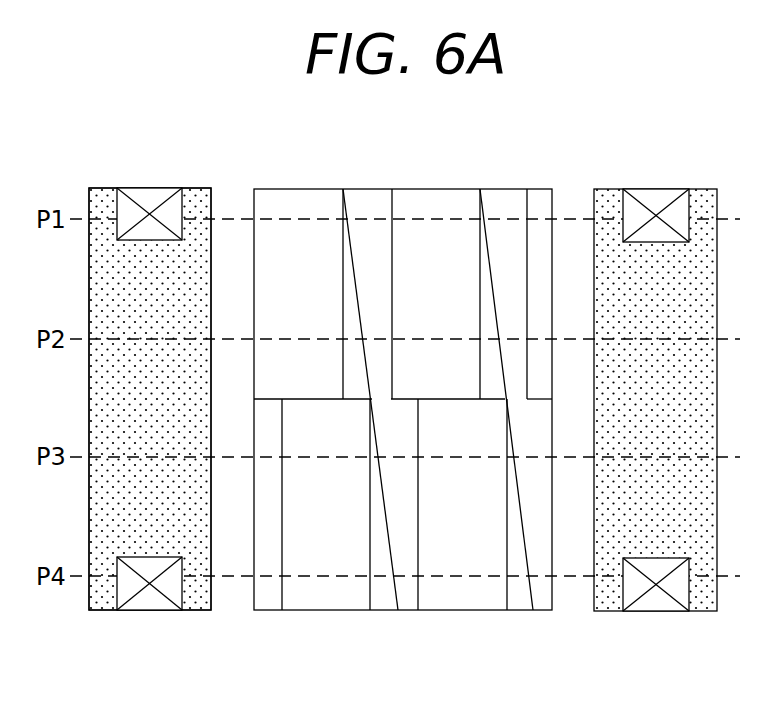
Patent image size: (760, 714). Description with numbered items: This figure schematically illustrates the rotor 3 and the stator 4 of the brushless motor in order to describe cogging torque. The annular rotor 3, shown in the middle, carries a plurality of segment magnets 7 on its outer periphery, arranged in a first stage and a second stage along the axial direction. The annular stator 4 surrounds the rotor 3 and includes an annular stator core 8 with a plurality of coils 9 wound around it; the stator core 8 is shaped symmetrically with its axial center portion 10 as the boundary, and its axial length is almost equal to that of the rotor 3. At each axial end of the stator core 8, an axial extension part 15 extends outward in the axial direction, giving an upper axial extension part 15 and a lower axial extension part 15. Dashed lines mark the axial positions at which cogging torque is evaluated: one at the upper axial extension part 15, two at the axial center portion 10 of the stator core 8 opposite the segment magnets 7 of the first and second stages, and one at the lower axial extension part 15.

The rotor 3 is at (502, 177).
The stator 4 is at (632, 177).
The segment magnets 7 is at (297, 200).
The stator core 8 is at (197, 176).
The coils 9 is at (150, 196).
The axial center portion 10 is at (150, 397).
The axial extension part 15 is at (200, 208).